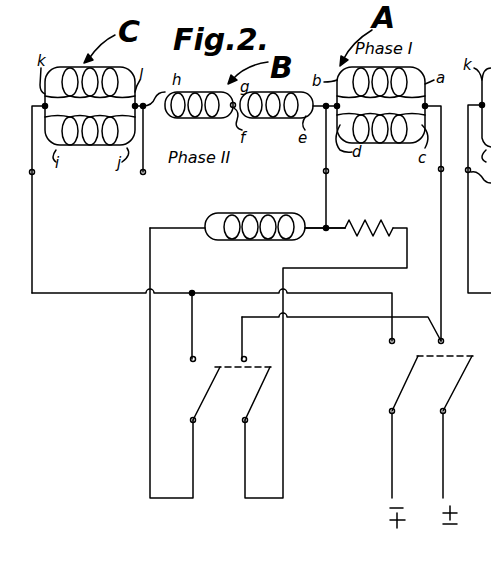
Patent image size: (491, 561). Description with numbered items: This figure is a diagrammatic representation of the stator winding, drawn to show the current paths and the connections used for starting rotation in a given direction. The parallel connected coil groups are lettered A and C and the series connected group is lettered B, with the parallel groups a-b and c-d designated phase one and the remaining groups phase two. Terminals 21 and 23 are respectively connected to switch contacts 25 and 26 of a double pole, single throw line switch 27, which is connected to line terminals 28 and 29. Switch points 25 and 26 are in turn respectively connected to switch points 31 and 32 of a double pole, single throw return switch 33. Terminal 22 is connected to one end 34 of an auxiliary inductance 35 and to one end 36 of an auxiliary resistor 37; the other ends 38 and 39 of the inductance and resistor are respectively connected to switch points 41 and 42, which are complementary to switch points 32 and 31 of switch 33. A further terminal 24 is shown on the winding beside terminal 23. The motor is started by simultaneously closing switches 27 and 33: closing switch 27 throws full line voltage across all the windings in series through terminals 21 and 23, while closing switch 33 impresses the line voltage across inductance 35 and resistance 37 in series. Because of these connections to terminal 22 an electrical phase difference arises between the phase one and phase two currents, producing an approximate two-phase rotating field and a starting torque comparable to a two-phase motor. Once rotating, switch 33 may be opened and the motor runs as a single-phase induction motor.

The terminal 21 is at (438, 171).
The terminal 22 is at (329, 172).
The terminal 23 is at (35, 173).
The terminal of phase II winding 24 is at (145, 175).
The switch contact 25 is at (444, 341).
The switch contact 26 is at (390, 344).
The line switch 27 is at (432, 383).
The line terminal 28 is at (444, 443).
The line terminal 29 is at (393, 455).
The switch point 31 is at (246, 356).
The switch point 32 is at (196, 357).
The return switch 33 is at (232, 393).
The end of auxiliary inductance 34 is at (320, 232).
The auxiliary inductance 35 is at (256, 239).
The end of auxiliary resistor 36 is at (336, 232).
The auxiliary resistor 37 is at (366, 236).
The other end of inductance 38 is at (203, 230).
The other end of resistor 39 is at (398, 226).
The switch point 41 is at (196, 420).
The switch point 42 is at (258, 418).